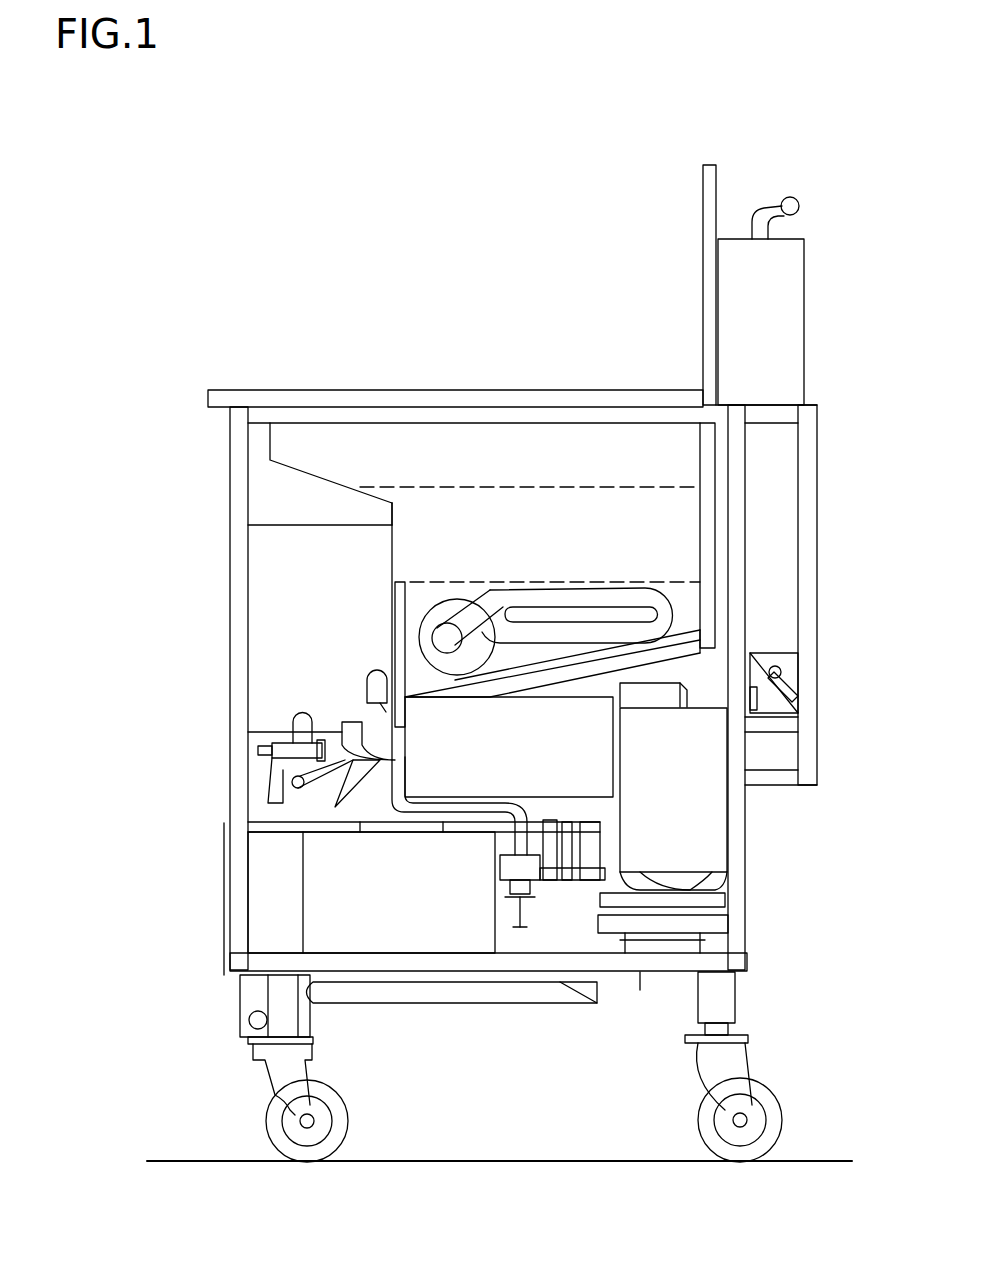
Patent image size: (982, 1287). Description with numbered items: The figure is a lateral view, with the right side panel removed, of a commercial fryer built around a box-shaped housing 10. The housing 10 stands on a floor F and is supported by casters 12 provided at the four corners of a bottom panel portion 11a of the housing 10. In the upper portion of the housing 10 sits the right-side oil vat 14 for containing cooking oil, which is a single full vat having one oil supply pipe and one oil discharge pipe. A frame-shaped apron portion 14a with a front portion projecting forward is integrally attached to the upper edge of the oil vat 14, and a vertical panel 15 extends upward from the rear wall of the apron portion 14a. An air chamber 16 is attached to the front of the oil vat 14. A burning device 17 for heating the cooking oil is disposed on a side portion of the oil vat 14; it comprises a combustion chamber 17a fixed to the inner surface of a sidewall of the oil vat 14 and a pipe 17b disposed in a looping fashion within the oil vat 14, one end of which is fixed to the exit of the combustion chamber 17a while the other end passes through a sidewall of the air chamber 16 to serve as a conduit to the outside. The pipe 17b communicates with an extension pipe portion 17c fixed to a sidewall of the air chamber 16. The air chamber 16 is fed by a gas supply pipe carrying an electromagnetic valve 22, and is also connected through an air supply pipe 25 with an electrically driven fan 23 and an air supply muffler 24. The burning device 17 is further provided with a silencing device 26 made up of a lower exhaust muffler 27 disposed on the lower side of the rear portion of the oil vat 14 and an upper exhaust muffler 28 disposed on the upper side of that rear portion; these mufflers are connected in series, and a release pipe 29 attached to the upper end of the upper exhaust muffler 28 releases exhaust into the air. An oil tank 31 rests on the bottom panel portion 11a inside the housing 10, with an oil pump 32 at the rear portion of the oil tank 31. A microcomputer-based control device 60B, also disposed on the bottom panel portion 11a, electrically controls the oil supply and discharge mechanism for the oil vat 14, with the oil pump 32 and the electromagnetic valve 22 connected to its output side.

The housing 10 is at (228, 468).
The bottom panel portion 11a is at (640, 975).
The casters 12 is at (262, 1073).
The oil vat 14 is at (390, 504).
The apron portion 14a is at (270, 440).
The vertical panel 15 is at (702, 207).
The air chamber 16 is at (265, 617).
The burning device 17 is at (630, 580).
The combustion chamber 17a is at (437, 593).
The pipe 17b is at (555, 590).
The extension pipe portion 17c is at (360, 692).
The electromagnetic valve 22 is at (562, 885).
The electrically driven fan 23 is at (735, 925).
The air supply muffler 24 is at (705, 843).
The air supply pipe 25 is at (718, 650).
The silencing device 26 is at (803, 532).
The lower exhaust muffler 27 is at (585, 752).
The upper exhaust muffler 28 is at (780, 580).
The release pipe 29 is at (755, 232).
The oil tank 31 is at (316, 906).
The oil pump 32 is at (710, 880).
The control device 60B is at (224, 942).
The floor F is at (805, 1160).